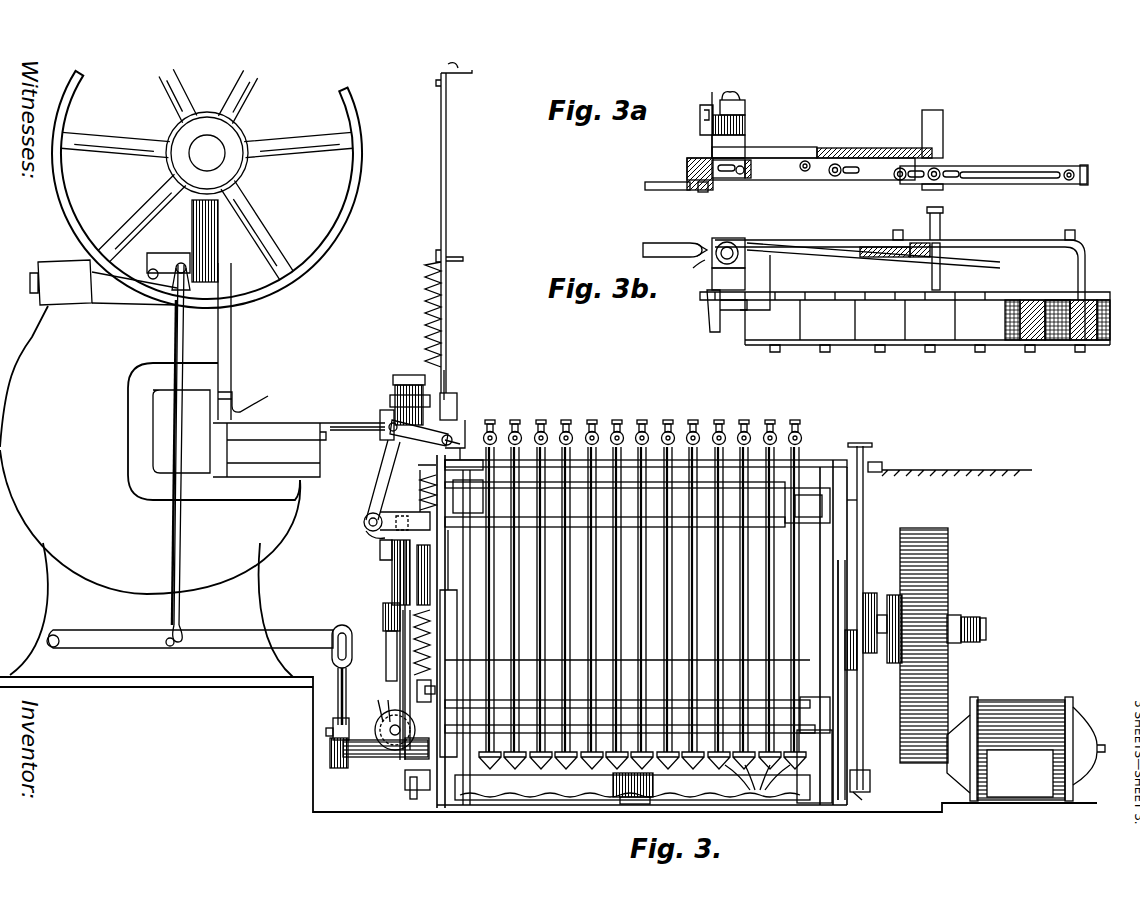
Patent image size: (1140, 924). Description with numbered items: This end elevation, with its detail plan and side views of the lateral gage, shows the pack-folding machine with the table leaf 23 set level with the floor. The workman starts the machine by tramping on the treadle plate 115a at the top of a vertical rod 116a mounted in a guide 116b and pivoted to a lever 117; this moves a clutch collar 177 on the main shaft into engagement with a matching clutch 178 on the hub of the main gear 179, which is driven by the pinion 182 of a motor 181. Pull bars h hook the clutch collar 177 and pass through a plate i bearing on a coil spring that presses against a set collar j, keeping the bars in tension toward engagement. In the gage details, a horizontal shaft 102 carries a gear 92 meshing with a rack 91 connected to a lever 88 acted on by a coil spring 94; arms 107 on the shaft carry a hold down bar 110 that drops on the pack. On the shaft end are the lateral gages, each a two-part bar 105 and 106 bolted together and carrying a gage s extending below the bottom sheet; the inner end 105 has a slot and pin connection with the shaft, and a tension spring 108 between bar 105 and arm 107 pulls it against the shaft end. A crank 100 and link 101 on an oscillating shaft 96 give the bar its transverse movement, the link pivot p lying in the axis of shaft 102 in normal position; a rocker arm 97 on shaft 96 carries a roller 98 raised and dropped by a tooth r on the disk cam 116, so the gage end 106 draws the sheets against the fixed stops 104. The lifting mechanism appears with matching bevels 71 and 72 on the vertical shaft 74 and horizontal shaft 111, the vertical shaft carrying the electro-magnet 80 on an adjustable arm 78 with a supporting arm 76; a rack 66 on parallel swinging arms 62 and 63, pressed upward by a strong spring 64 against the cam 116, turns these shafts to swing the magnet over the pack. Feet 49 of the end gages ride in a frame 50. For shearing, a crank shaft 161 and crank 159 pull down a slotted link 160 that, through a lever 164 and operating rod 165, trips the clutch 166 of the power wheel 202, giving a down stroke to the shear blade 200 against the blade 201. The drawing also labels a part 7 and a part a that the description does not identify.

In FIG. 3, the power wheel 202 is at (338, 226).
In FIG. 3, the clutch 166 is at (220, 280).
In FIG. 3, the shear blade 200 is at (236, 404).
In FIG. 3, the shear blade 201 is at (260, 450).
In FIG. 3, the operating rod 165 is at (182, 548).
In FIG. 3, the lever 164 is at (256, 650).
In FIG. 3, the slotted link 160 is at (335, 702).
In FIG. 3, the crank 159 is at (330, 744).
In FIG. 3, the crank shaft 161 is at (358, 762).
In FIG. 3, the gage bar 106 is at (447, 158).
In FIG. 3A, the gage bar 106 is at (990, 180).
In FIG. 3B, the gage bar 106 is at (1000, 238).
In FIG. 3, the hold down bar 110 is at (452, 258).
In FIG. 3A, the hold down bar 110 is at (945, 108).
In FIG. 3B, the hold down bar 110 is at (942, 272).
In FIG. 3, the tension spring 108 is at (426, 315).
In FIG. 3A, the tension spring 108 is at (882, 148).
In FIG. 3B, the tension spring 108 is at (900, 258).
In FIG. 3, the gage bar inner end 105 is at (447, 377).
In FIG. 3A, the gage bar inner end 105 is at (810, 178).
In FIG. 3B, the gage bar inner end 105 is at (783, 240).
In FIG. 3, the adjustable arm 78 is at (415, 394).
In FIG. 3, the vertical shaft 74 is at (400, 386).
In FIG. 3, the electro-magnet 80 is at (380, 412).
In FIG. 3, the supporting arm 76 is at (383, 420).
In FIG. 3, the gear 92 is at (458, 420).
In FIG. 3A, the gear 92 is at (748, 128).
In FIG. 3, the stops 104 is at (480, 428).
In FIG. 3B, the stops 104 is at (772, 268).
In FIG. 3, the link 101 is at (420, 433).
In FIG. 3A, the link 101 is at (645, 185).
In FIG. 3B, the link 101 is at (643, 250).
In FIG. 3, the link pivot p is at (462, 437).
In FIG. 3A, the link pivot p is at (698, 190).
In FIG. 3B, the link pivot p is at (693, 265).
In FIG. 3, the crank 100 is at (380, 484).
In FIG. 3, the coil spring 94 is at (440, 500).
In FIG. 3, the shaft 96 is at (364, 522).
In FIG. 3, the roller 98 is at (410, 523).
In FIG. 3, the rocker arm 97 is at (368, 534).
In FIG. 3, the tooth r is at (382, 552).
In FIG. 3, the disk cam 116 is at (398, 566).
In FIG. 3, the lever 88 is at (412, 570).
In FIG. 3, the shaft 7 is at (432, 588).
In FIG. 3, the spring 64 is at (432, 650).
In FIG. 3, the swinging arm 63 is at (433, 692).
In FIG. 3, the bevel 71 is at (382, 706).
In FIG. 3, the bevel 72 is at (382, 724).
In FIG. 3, the horizontal shaft 111 is at (400, 731).
In FIG. 3, the rack 66 is at (410, 762).
In FIG. 3, the swinging arm 62 is at (408, 786).
In FIG. 3, the frame 50 is at (815, 760).
In FIG. 3, the foot 49 is at (757, 784).
In FIG. 3, the lever 117 is at (850, 792).
In FIG. 3, the table leaf 23 is at (802, 460).
In FIG. 3B, the table leaf 23 is at (865, 298).
In FIG. 3, the treadle plate 115a is at (862, 443).
In FIG. 3, the guide 116b is at (900, 470).
In FIG. 3, the vertical rod 116a is at (866, 508).
In FIG. 3, the clutch collar 177 is at (882, 588).
In FIG. 3, the matching clutch 178 is at (897, 595).
In FIG. 3, the main gear 179 is at (950, 668).
In FIG. 3, the set collar j is at (955, 615).
In FIG. 3, the plate i is at (978, 617).
In FIG. 3, the pull bars h is at (986, 626).
In FIG. 3, the motor 181 is at (1026, 741).
In FIG. 3, the pinion 182 is at (900, 765).
In FIG. 3A, the horizontal shaft 102 is at (740, 96).
In FIG. 3B, the horizontal shaft 102 is at (737, 240).
In FIG. 3A, the rack 91 is at (704, 130).
In FIG. 3A, the arms 107 is at (790, 147).
In FIG. 3B, the arms 107 is at (885, 257).
In FIG. 3A, the gage s is at (1090, 178).
In FIG. 3B, the gage s is at (1086, 283).
In FIG. 3B, the partition a is at (1055, 300).